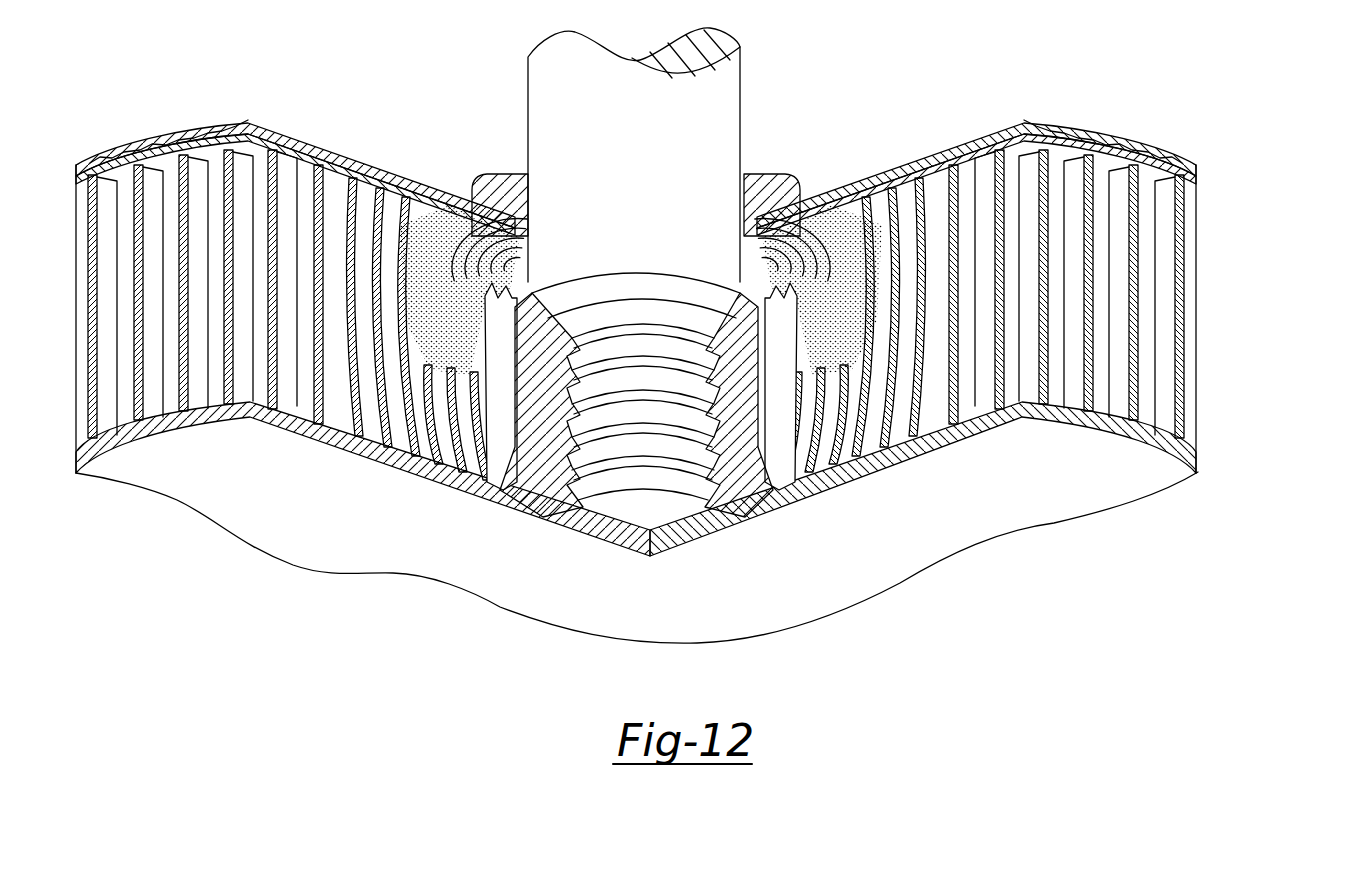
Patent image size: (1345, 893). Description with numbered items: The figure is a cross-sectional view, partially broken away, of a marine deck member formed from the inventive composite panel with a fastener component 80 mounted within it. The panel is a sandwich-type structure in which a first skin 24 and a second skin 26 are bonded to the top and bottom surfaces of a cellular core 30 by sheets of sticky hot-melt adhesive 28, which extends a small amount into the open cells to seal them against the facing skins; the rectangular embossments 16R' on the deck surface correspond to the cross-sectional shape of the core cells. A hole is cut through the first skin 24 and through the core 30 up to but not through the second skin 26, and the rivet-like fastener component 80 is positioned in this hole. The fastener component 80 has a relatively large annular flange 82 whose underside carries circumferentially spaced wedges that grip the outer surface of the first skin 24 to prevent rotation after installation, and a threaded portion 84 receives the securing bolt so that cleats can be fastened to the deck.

The rectangular embossments 16R' is at (645, 265).
The first skin 24 is at (1198, 163).
The second skin 26 is at (1198, 471).
The hot-melt adhesive 28 is at (1198, 190).
The core 30 is at (1175, 290).
The fastener component 80 is at (714, 122).
The annular flange 82 is at (752, 190).
The threaded insert sleeve 84 is at (863, 187).